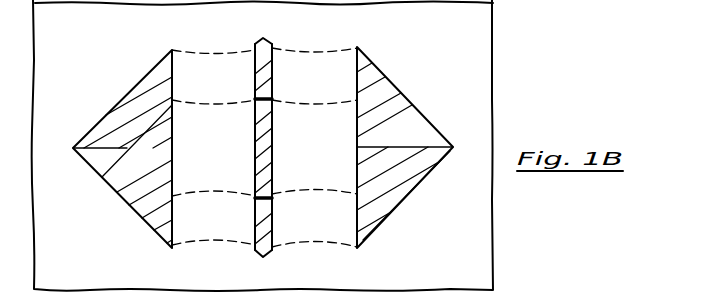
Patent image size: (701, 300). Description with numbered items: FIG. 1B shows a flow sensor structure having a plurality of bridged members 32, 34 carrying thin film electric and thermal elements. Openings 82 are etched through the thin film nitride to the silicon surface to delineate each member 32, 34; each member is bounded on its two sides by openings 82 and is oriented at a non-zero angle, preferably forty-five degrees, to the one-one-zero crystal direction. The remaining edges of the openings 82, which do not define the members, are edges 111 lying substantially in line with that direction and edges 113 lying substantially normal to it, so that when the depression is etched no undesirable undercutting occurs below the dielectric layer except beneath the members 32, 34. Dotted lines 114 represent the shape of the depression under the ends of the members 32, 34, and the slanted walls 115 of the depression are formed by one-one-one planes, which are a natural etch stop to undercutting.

The openings 82 is at (163, 161).
The edges 111 is at (260, 43).
The edges 113 is at (263, 43).
The dotted lines 114 is at (207, 52).
The slanted walls 115 is at (137, 128).
The member 32 is at (222, 238).
The member 34 is at (325, 238).